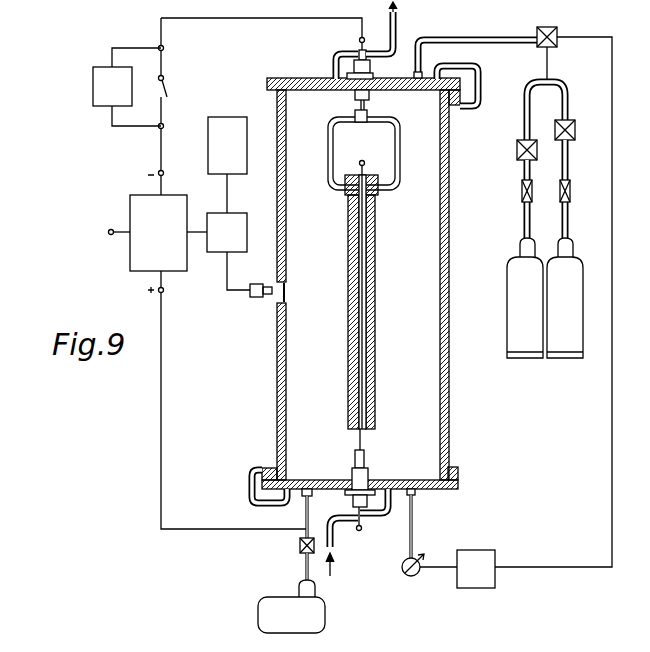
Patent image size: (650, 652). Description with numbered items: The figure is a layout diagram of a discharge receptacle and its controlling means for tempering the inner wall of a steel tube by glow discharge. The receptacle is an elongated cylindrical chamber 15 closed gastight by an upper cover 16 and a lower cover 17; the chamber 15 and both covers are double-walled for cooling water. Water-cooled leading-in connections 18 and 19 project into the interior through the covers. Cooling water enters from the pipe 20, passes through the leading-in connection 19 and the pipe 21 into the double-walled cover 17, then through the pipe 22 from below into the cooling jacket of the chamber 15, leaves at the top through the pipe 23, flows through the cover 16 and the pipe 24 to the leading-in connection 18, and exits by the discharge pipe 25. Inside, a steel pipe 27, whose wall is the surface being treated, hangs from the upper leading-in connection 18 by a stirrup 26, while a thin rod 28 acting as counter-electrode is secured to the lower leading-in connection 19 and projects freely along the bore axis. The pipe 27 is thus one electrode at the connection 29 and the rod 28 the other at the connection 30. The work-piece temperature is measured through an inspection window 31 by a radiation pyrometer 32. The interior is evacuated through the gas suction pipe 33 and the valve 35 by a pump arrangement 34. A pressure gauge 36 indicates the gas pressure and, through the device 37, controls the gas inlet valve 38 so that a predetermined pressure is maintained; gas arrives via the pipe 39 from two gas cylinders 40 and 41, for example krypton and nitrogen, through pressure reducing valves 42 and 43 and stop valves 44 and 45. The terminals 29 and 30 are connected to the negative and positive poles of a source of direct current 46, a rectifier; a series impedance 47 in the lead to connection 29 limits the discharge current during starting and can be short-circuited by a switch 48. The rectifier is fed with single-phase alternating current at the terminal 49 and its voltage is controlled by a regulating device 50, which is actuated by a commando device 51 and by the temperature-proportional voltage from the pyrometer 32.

The elongated cylindrical chamber 15 is at (377, 285).
The upper cover 16 is at (361, 67).
The lower cover 17 is at (360, 504).
The upper leading-in connection 18 is at (379, 86).
The lower leading-in connection 19 is at (346, 497).
The cooling water supply pipe 20 is at (345, 547).
The pipe 21 is at (384, 515).
The pipe 22 is at (247, 467).
The pipe 23 is at (473, 77).
The pipe 24 is at (329, 58).
The discharge pipe 25 is at (403, 28).
The stirrup 26 is at (410, 153).
The steel pipe 27 is at (310, 295).
The thin rod 28 is at (303, 438).
The electrode connection 29 is at (375, 27).
The electrode connection 30 is at (373, 545).
The inspection window 31 is at (264, 303).
The radiation pyrometer 32 is at (242, 288).
The gas suction pipe 33 is at (288, 513).
The pump arrangement 34 is at (278, 603).
The valve 35 is at (289, 559).
The pressure gauge 36 is at (427, 553).
The control device 37 is at (476, 548).
The gas inlet valve 38 is at (565, 26).
The gas supply pipe 39 is at (513, 286).
The gas cylinder 40 is at (524, 318).
The gas cylinder 41 is at (565, 318).
The pressure reducing valve 42 is at (509, 204).
The pressure reducing valve 43 is at (581, 204).
The stop valve 44 is at (511, 138).
The stop valve 45 is at (577, 115).
The source of direct current 46 is at (144, 222).
The series impedance 47 is at (108, 87).
The switch 48 is at (184, 84).
The terminal 49 is at (106, 217).
The regulating device 50 is at (213, 268).
The commando device 51 is at (227, 141).